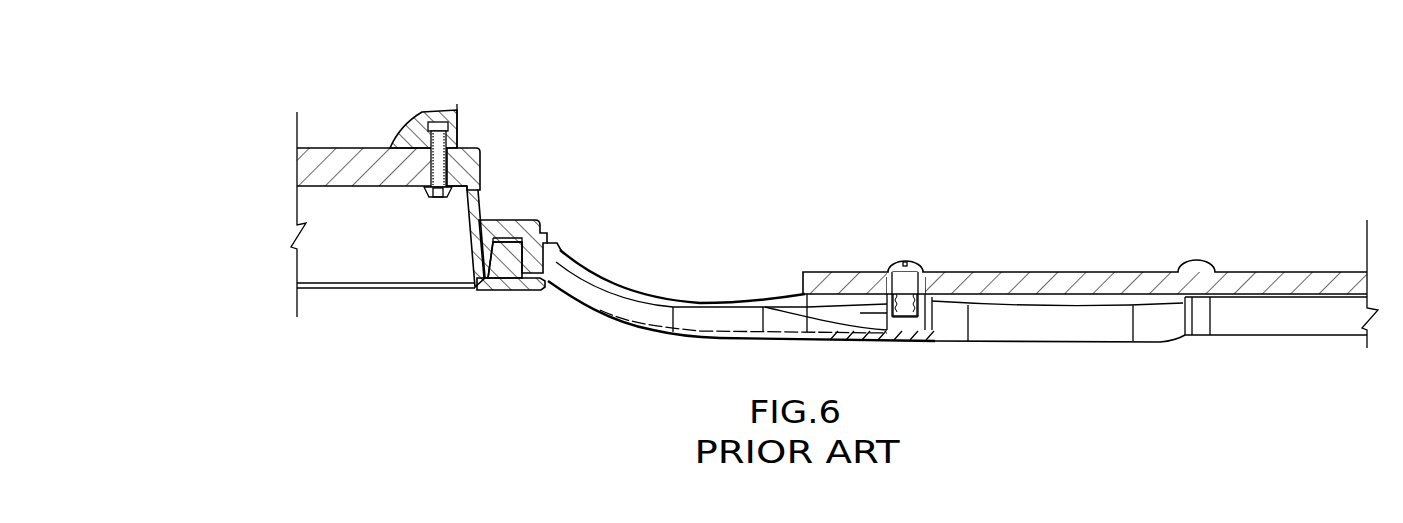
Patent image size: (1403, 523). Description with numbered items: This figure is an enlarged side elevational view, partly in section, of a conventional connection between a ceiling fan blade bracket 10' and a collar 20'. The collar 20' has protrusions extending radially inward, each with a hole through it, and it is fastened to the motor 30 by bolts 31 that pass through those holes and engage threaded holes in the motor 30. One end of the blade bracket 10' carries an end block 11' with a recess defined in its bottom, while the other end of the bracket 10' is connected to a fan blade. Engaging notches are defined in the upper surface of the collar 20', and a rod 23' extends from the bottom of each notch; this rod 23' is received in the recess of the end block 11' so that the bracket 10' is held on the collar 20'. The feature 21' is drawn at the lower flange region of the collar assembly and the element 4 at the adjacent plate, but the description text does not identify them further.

The motor 30 is at (422, 116).
The bolt 31 is at (463, 104).
The collar 20' is at (507, 200).
The end block 11' is at (536, 221).
The rod 23' is at (509, 304).
The lower flange 21' is at (537, 330).
The blade bracket 10' is at (957, 277).
The panel plate 4 is at (1097, 281).